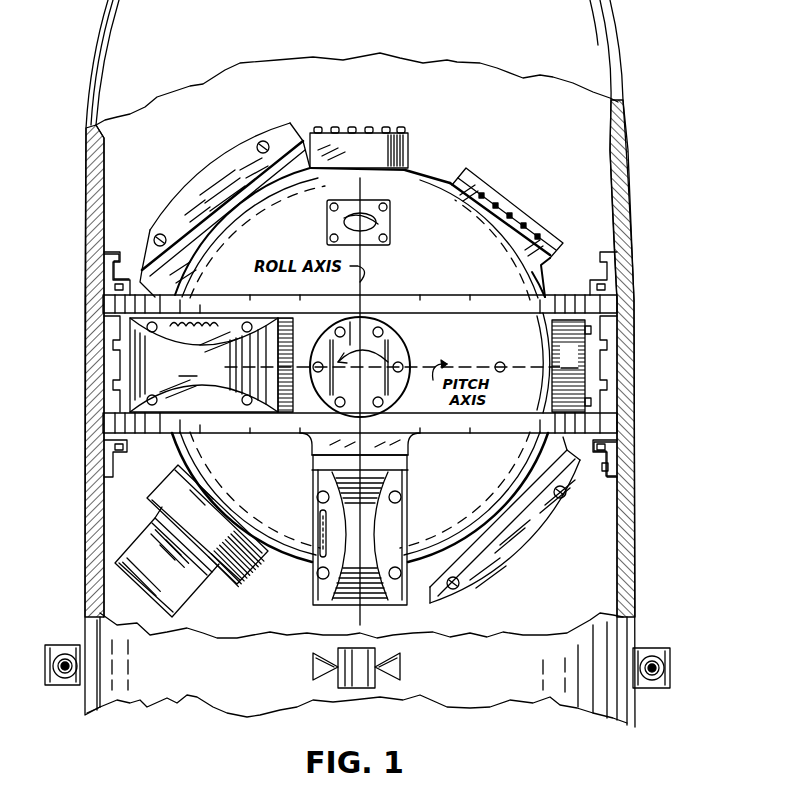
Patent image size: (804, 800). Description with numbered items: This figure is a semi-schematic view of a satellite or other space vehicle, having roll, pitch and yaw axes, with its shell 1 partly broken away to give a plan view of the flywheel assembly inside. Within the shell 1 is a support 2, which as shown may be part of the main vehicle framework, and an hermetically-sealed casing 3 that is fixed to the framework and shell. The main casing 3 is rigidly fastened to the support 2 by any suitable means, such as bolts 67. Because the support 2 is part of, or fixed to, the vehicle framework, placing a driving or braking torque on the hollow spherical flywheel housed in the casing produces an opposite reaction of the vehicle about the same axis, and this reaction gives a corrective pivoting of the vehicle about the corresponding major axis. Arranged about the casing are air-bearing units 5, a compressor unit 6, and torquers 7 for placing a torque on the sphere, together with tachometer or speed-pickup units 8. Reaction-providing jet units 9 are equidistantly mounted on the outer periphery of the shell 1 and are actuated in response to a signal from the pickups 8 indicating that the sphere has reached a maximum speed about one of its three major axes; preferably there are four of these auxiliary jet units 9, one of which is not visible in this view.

The shell 1 is at (87, 172).
The support 2 is at (101, 156).
The hermetically-sealed casing 3 is at (419, 182).
The air-bearing units 5 is at (368, 133).
The compressor unit 6 is at (207, 633).
The torquers 7 is at (227, 159).
The tachometer or speed-pickup units 8 is at (509, 197).
The reaction-providing jet units 9 is at (47, 666).
The bolts 67 is at (136, 240).